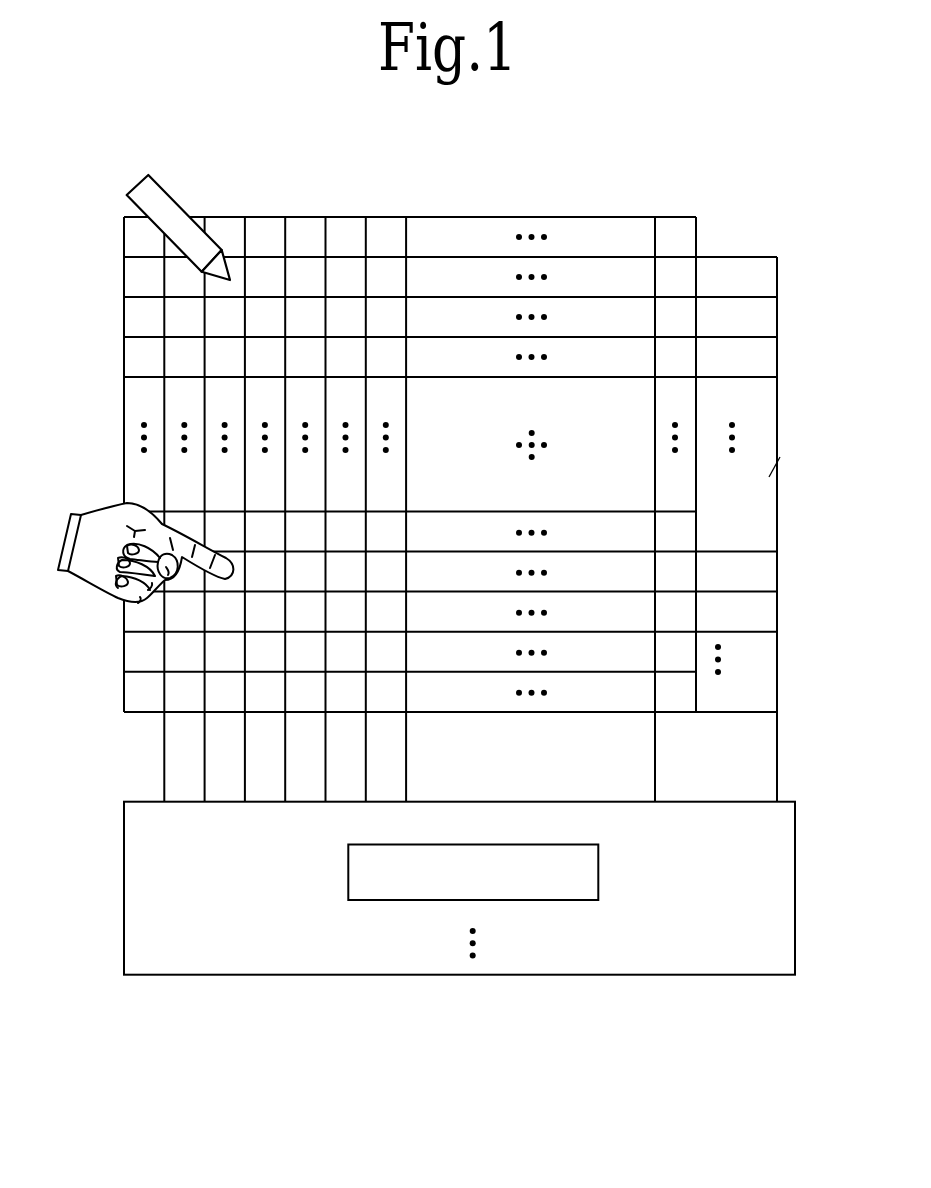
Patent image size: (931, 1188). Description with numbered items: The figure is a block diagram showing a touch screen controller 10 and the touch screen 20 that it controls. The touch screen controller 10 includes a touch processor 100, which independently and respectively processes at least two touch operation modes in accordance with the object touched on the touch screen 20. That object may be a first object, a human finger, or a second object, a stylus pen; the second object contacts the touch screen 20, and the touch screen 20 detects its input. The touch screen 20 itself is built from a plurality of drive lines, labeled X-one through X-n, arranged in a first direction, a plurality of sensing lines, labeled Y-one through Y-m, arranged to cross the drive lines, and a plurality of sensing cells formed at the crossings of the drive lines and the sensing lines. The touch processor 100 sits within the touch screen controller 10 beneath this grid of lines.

The touch screen controller 10 is at (795, 890).
The touch screen 20 is at (124, 275).
The touch processor 100 is at (599, 868).